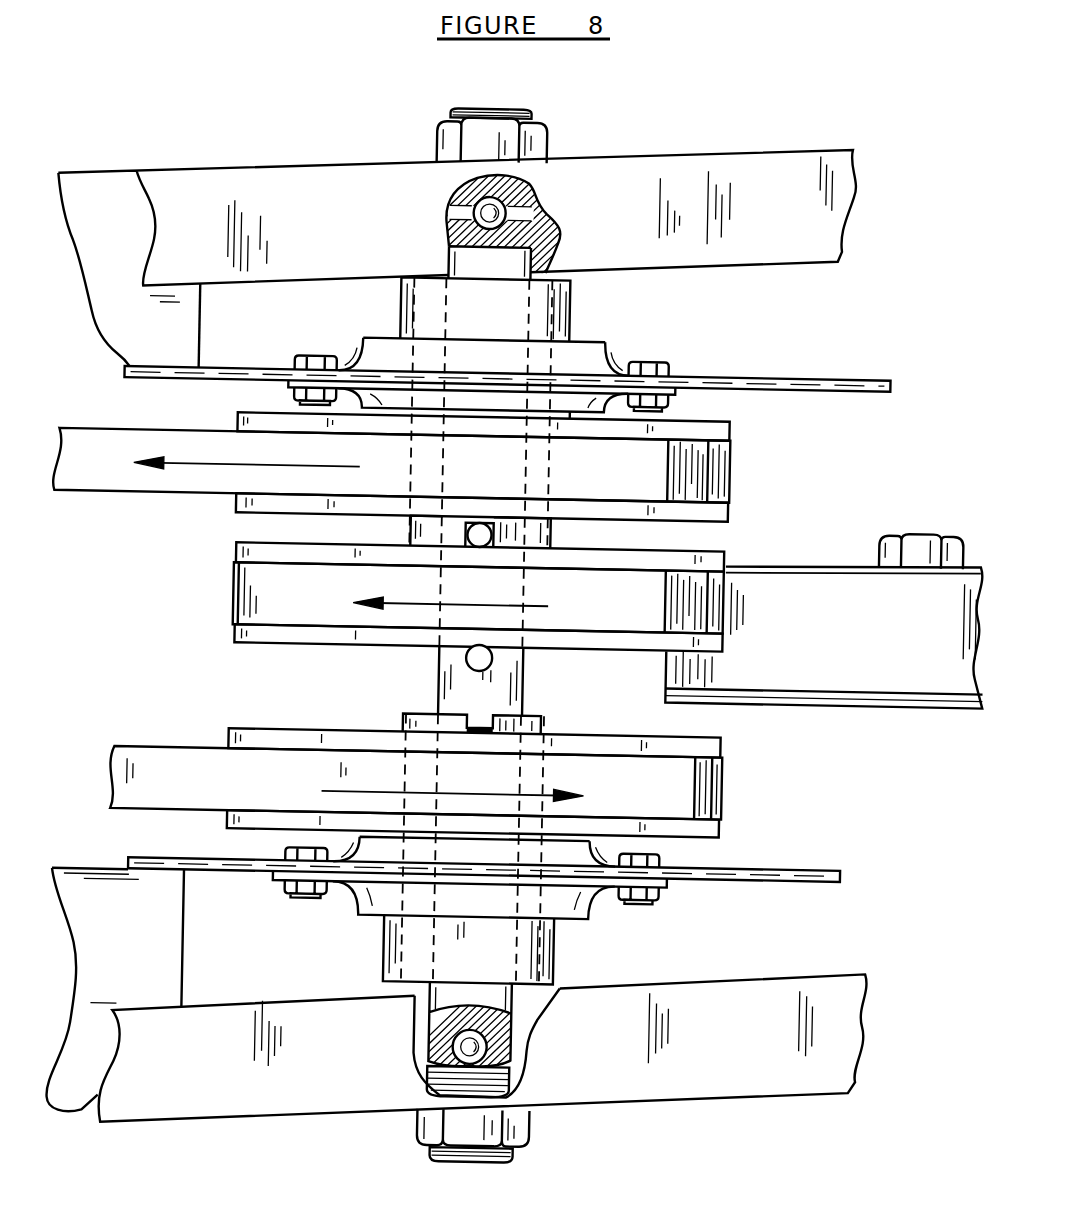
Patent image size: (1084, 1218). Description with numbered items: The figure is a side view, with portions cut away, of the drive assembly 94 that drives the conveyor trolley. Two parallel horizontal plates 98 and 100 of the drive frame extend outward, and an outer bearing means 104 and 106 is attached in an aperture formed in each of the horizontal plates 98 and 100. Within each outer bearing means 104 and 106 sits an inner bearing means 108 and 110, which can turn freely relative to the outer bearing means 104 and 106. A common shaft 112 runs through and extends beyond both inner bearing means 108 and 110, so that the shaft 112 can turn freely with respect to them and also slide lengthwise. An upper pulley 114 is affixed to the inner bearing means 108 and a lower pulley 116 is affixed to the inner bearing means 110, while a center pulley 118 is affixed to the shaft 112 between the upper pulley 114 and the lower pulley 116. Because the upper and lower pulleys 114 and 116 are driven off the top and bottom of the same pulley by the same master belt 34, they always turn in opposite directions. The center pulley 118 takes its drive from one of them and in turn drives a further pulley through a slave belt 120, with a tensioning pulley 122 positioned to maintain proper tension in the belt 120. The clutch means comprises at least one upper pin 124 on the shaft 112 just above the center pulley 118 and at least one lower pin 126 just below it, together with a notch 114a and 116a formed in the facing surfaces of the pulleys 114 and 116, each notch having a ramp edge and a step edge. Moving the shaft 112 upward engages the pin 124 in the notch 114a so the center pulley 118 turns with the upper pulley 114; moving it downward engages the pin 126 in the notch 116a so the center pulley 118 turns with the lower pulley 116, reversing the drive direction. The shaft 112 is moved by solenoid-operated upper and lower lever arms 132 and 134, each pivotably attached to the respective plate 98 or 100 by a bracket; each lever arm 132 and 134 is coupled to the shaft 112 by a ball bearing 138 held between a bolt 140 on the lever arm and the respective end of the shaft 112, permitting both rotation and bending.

The master belt 34 is at (721, 486).
The drive assembly 94 is at (630, 130).
The horizontal plate 98 is at (719, 371).
The horizontal plate 100 is at (795, 876).
The outer bearing means 104 is at (371, 367).
The outer bearing means 106 is at (606, 895).
The inner bearing means 108 is at (558, 319).
The inner bearing means 110 is at (408, 944).
The common shaft 112 is at (467, 678).
The upper pulley 114 is at (733, 423).
The notch 114a is at (472, 512).
The lower pulley 116 is at (702, 741).
The notch 116a is at (490, 708).
The center pulley 118 is at (697, 556).
The slave belt 120 is at (253, 603).
The tensioning pulley 122 is at (848, 591).
The upper pin 124 is at (487, 549).
The lower pin 126 is at (502, 660).
The upper lever arm 132 is at (773, 167).
The lower lever arm 134 is at (842, 1033).
The ball bearing 138 is at (526, 213).
The bolt 140 is at (438, 130).